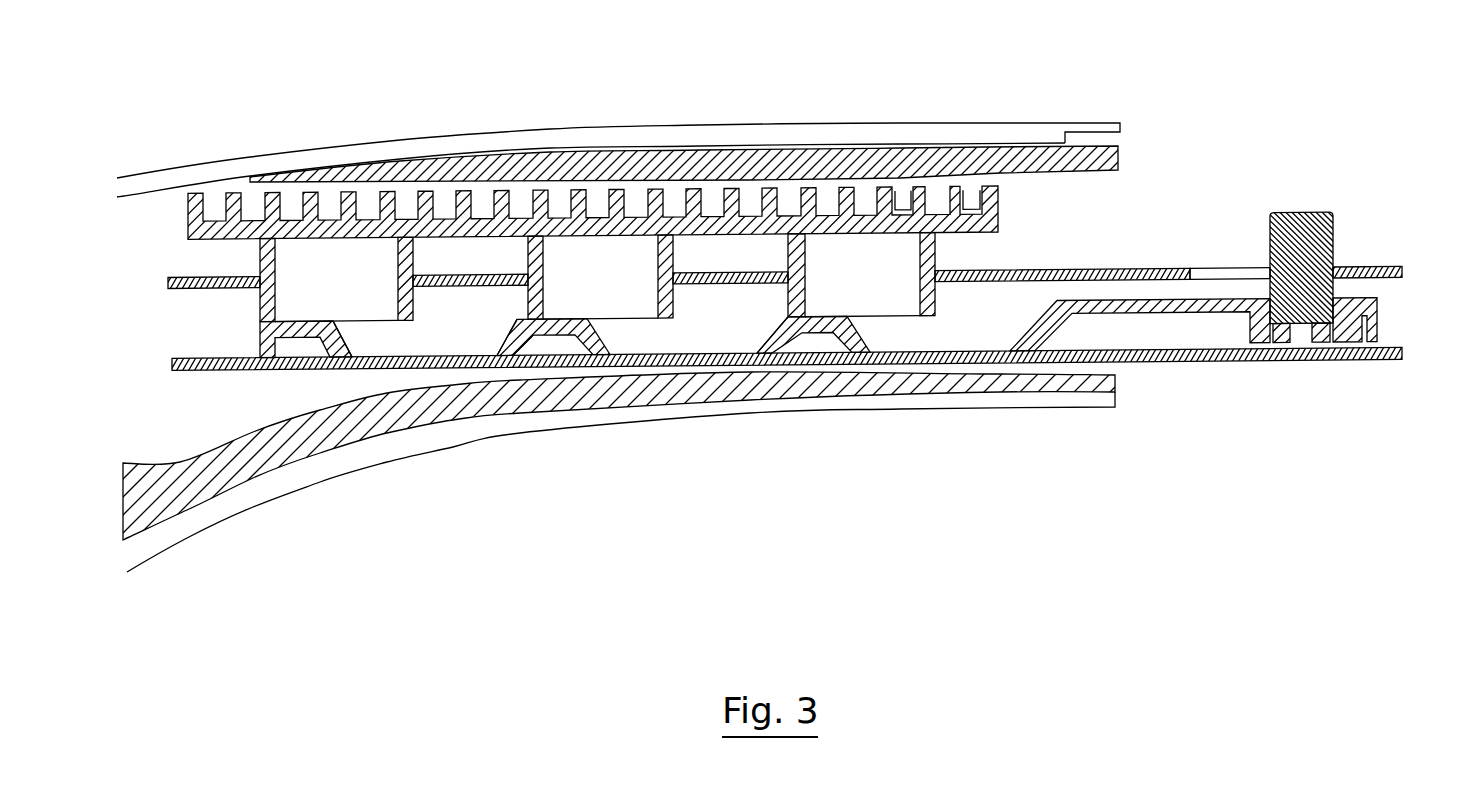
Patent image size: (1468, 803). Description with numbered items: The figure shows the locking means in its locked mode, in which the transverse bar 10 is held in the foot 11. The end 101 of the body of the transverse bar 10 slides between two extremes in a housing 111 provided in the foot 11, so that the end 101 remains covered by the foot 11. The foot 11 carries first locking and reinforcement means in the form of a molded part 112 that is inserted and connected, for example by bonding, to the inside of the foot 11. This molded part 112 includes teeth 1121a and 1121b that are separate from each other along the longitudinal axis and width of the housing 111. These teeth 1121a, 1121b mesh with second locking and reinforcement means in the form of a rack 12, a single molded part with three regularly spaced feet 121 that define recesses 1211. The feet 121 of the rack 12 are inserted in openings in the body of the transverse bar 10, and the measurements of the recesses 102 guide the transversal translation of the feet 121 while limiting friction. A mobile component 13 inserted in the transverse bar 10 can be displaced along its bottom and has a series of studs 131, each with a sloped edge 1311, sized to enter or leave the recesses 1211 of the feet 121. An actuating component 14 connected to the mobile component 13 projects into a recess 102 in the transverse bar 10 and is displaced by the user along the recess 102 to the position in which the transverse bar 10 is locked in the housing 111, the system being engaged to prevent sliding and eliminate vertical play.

The transverse bar 10 is at (1253, 341).
The end of the body of transverse bar 101 is at (700, 296).
The recess 102 is at (1396, 316).
The foot 11 is at (502, 135).
The housing 111 is at (165, 237).
The molded part 112 is at (703, 166).
The tooth 1121a is at (900, 205).
The tooth 1121b is at (975, 202).
The rack 12 is at (628, 243).
The feet of the rack 121 is at (793, 322).
The recesses 1211 is at (862, 323).
The mobile component 13 is at (1163, 325).
The studs 131 is at (545, 341).
The sloped edge 1311 is at (515, 362).
The actuating component 14 is at (1288, 225).